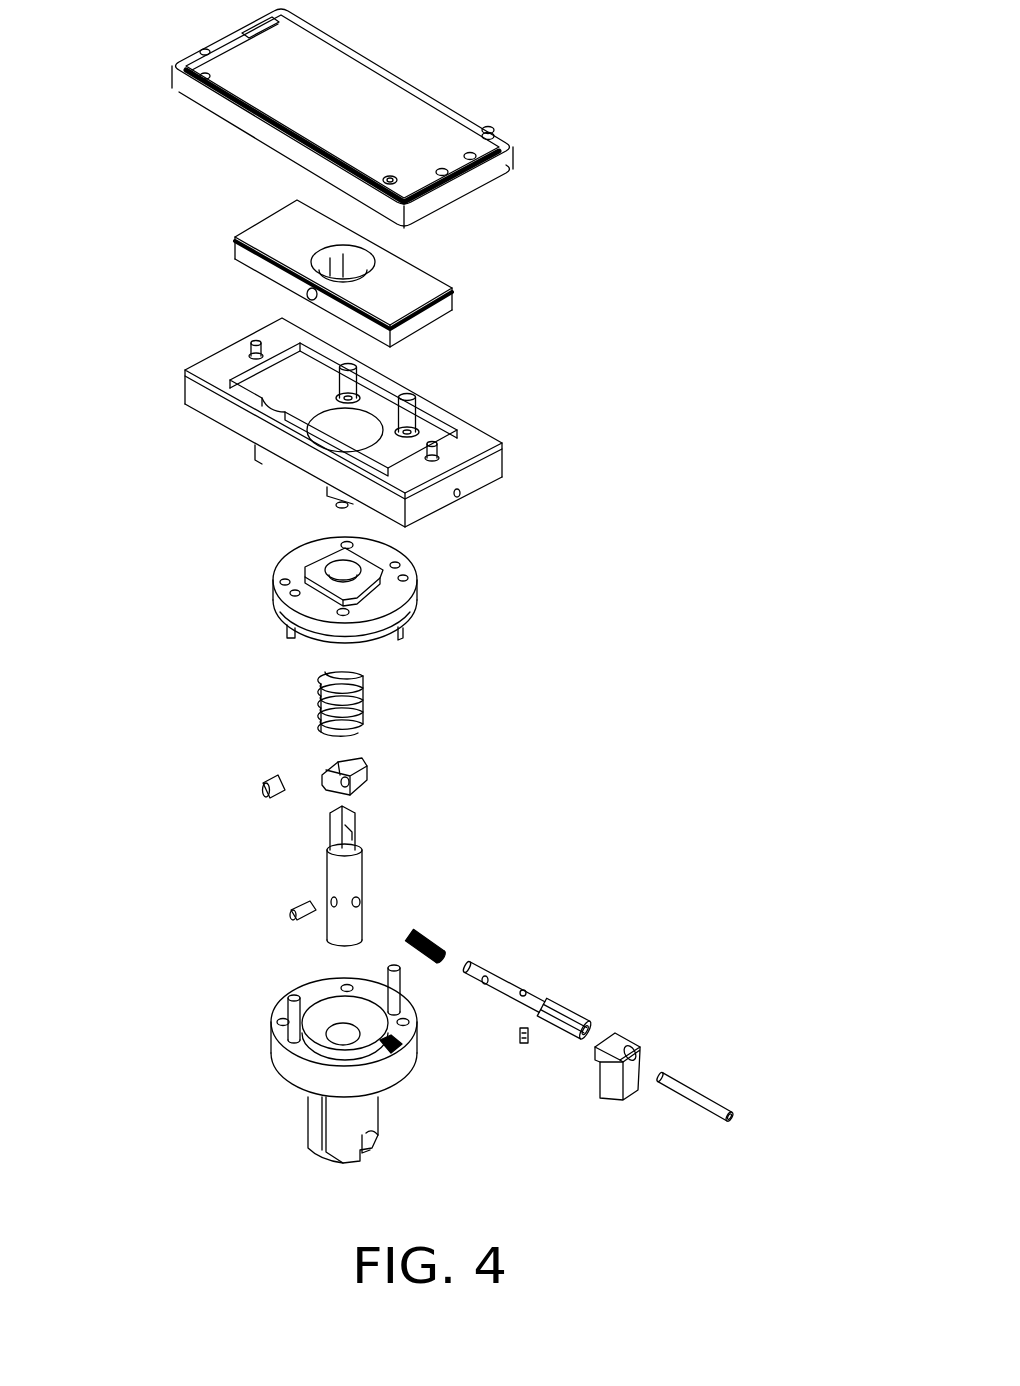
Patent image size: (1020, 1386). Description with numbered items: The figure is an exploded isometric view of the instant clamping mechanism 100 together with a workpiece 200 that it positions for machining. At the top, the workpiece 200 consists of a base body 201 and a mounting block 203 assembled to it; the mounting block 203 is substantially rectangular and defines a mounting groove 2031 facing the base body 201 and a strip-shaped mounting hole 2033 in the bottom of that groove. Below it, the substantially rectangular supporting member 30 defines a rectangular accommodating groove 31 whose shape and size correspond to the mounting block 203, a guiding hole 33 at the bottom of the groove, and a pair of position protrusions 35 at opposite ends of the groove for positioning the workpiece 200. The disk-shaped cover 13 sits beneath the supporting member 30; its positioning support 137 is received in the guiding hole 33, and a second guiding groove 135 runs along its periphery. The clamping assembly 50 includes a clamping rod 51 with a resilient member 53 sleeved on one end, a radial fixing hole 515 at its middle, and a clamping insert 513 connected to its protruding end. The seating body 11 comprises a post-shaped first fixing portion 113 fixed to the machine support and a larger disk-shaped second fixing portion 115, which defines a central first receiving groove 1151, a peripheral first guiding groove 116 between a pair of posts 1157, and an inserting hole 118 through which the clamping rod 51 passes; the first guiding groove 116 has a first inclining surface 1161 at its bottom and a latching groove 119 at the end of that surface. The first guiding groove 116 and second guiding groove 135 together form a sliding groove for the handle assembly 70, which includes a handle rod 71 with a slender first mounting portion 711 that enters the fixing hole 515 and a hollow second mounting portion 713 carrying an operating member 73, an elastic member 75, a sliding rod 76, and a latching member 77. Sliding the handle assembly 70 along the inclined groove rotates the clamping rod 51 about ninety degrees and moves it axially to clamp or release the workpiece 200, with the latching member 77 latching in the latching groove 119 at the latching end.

The instant clamping mechanism 100 is at (515, 685).
The workpiece 200 is at (572, 213).
The base body 201 is at (442, 205).
The mounting block 203 is at (355, 257).
The mounting groove 2031 is at (343, 250).
The mounting hole 2033 is at (327, 258).
The supporting member 30 is at (336, 414).
The accommodating groove 31 is at (437, 430).
The guiding hole 33 is at (335, 445).
The position protrusions 35 is at (437, 452).
The cover 13 is at (348, 611).
The second guiding groove 135 is at (387, 647).
The positioning support 137 is at (313, 563).
The clamping assembly 50 is at (404, 809).
The clamping rod 51 is at (407, 876).
The clamping insert 513 is at (340, 760).
The fixing hole 515 is at (362, 902).
The resilient member 53 is at (360, 717).
The elastic member 75 is at (440, 938).
The seating body 11 is at (318, 1048).
The first receiving groove 1151 is at (340, 1017).
The posts 1157 is at (292, 990).
The first guiding groove 116 is at (333, 1057).
The first inclining surface 1161 is at (310, 1063).
The second fixing portion 115 is at (310, 1078).
The first fixing portion 113 is at (347, 1130).
The inserting hole 118 is at (345, 1040).
The latching groove 119 is at (350, 1040).
The handle assembly 70 is at (609, 1004).
The handle rod 71 is at (543, 1014).
The first mounting portion 711 is at (470, 968).
The second mounting portion 713 is at (520, 1000).
The latching member 77 is at (530, 1042).
The operating member 73 is at (633, 1043).
The sliding rod 76 is at (709, 1077).